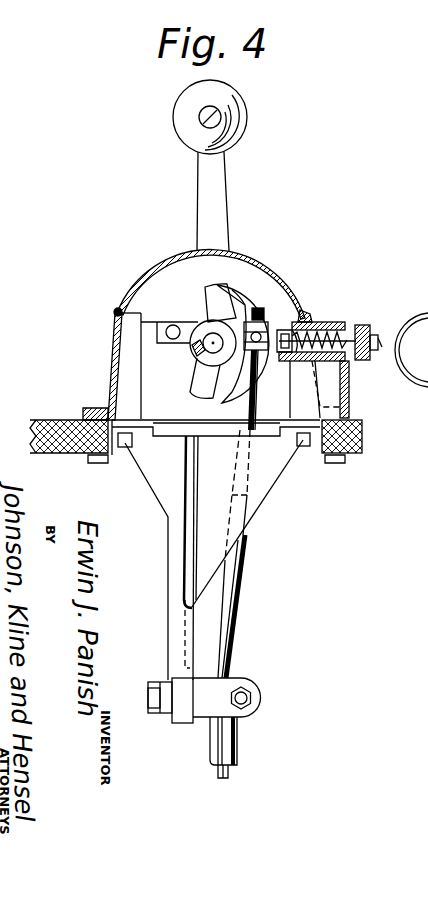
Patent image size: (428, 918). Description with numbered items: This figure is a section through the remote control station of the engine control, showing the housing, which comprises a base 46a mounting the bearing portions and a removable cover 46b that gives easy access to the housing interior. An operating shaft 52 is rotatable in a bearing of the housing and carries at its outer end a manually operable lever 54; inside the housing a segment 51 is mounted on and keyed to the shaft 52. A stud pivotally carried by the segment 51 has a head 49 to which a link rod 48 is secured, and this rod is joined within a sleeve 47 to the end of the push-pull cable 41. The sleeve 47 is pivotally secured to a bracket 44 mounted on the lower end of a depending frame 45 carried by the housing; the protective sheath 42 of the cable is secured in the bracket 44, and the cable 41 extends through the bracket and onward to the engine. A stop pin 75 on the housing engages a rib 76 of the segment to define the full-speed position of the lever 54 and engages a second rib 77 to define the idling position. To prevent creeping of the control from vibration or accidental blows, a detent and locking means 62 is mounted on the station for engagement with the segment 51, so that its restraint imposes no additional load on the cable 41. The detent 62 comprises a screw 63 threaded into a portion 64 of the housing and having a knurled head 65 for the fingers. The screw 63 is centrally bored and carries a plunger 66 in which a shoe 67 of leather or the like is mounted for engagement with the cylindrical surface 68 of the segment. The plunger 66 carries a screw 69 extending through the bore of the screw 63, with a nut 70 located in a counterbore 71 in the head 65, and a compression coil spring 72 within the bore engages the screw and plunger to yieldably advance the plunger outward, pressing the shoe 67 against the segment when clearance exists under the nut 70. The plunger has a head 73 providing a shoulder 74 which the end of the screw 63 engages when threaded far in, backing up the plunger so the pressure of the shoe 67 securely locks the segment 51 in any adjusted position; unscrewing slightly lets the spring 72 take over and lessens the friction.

The push-pull cable 41 is at (228, 767).
The protective sheath 42 is at (237, 741).
The bracket 44 is at (240, 678).
The depending frame 45 is at (172, 567).
The base 46a is at (112, 366).
The removable cover 46b is at (166, 262).
The sleeve 47 is at (243, 590).
The link rod 48 is at (253, 406).
The head 49 is at (216, 353).
The segment 51 is at (263, 358).
The operating shaft 52 is at (254, 320).
The manually operable lever 54 is at (221, 200).
The detent and locking means 62 is at (336, 316).
The screw 63 is at (347, 366).
The portion of the remote control housing 64 is at (322, 320).
The knurled head 65 is at (365, 325).
The plunger 66 is at (306, 361).
The shoe 67 is at (283, 330).
The cylindrical surface 68 is at (246, 292).
The screw 69 is at (300, 363).
The nut 70 is at (374, 340).
The counterbore 71 is at (376, 350).
The compression coil spring 72 is at (318, 365).
The head 73 is at (305, 318).
The shoulder 74 is at (295, 330).
The stop pin 75 is at (173, 325).
The rib 76 is at (237, 312).
The second rib 77 is at (215, 386).